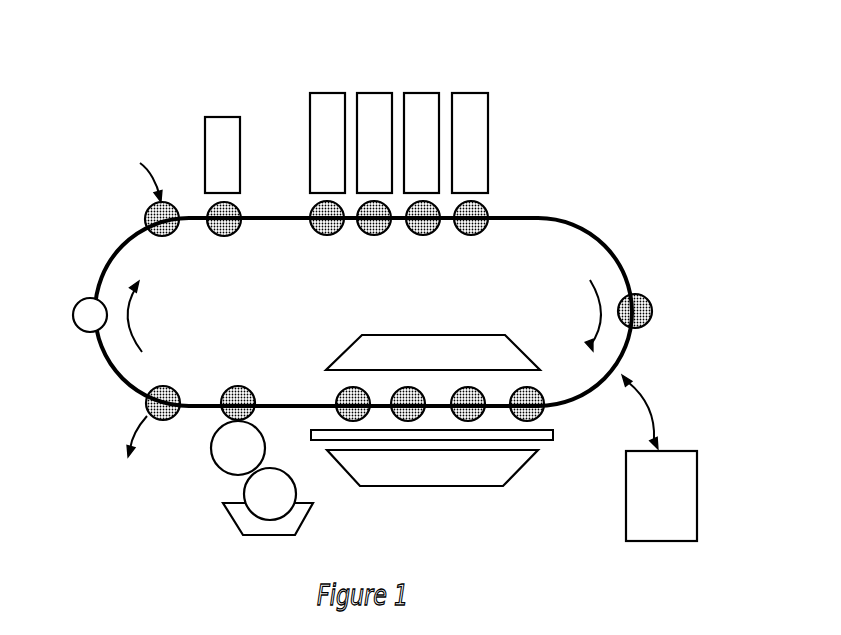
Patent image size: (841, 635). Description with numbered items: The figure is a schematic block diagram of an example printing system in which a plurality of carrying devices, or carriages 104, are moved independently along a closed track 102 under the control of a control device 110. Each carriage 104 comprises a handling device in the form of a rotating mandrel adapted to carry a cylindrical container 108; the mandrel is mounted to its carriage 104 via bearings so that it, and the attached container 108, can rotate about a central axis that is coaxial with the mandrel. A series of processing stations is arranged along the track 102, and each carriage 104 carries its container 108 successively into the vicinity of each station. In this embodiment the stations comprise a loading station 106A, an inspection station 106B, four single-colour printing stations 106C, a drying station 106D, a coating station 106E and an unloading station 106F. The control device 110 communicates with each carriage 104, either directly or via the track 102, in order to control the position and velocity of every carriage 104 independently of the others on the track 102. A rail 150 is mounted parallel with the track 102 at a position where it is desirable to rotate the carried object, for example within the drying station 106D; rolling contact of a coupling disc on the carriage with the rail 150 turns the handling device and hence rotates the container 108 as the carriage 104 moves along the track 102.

The track 102 is at (100, 268).
The carrying device 104 is at (73, 315).
The loading station 106A is at (130, 199).
The inspection station 106B is at (199, 76).
The single-colour printing station 106C is at (457, 92).
The drying station 106D is at (475, 496).
The coating station 106E is at (322, 525).
The unloading station 106F is at (110, 405).
The cylindrical container 108 is at (654, 311).
The control device 110 is at (681, 506).
The rail 150 is at (554, 450).